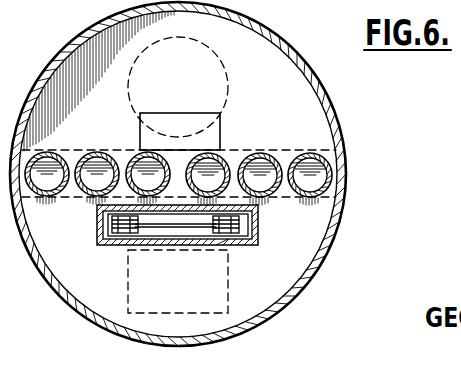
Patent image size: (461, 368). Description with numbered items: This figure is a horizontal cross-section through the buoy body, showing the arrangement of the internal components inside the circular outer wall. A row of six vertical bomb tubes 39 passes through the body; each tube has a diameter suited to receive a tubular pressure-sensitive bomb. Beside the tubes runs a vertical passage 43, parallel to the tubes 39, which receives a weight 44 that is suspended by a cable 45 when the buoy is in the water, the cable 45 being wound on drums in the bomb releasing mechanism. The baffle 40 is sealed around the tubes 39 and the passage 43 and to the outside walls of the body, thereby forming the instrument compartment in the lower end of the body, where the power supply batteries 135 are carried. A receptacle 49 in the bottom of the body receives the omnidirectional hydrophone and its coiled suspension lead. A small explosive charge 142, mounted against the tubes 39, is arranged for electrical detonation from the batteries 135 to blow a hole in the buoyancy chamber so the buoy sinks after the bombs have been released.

The baffle 40 is at (320, 117).
The vertical bomb tubes 39 is at (133, 152).
The receptacle 49 is at (226, 107).
The explosive charge 142 is at (140, 129).
The vertical passage 43 is at (252, 226).
The weight 44 is at (137, 223).
The cable 45 is at (153, 242).
The power supply batteries 135 is at (228, 298).